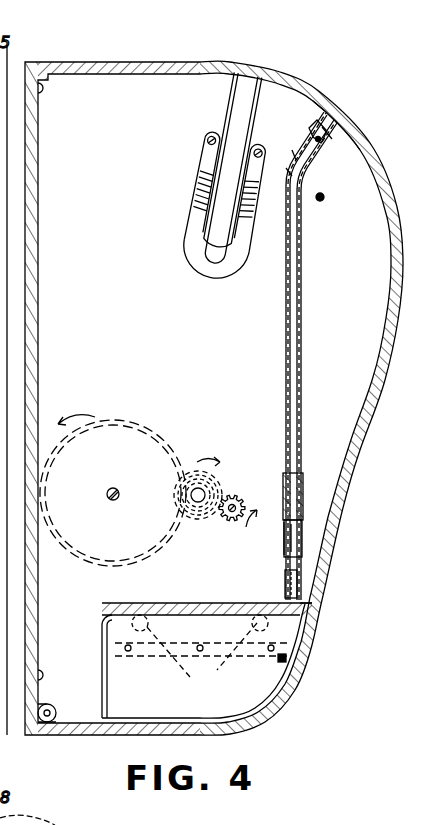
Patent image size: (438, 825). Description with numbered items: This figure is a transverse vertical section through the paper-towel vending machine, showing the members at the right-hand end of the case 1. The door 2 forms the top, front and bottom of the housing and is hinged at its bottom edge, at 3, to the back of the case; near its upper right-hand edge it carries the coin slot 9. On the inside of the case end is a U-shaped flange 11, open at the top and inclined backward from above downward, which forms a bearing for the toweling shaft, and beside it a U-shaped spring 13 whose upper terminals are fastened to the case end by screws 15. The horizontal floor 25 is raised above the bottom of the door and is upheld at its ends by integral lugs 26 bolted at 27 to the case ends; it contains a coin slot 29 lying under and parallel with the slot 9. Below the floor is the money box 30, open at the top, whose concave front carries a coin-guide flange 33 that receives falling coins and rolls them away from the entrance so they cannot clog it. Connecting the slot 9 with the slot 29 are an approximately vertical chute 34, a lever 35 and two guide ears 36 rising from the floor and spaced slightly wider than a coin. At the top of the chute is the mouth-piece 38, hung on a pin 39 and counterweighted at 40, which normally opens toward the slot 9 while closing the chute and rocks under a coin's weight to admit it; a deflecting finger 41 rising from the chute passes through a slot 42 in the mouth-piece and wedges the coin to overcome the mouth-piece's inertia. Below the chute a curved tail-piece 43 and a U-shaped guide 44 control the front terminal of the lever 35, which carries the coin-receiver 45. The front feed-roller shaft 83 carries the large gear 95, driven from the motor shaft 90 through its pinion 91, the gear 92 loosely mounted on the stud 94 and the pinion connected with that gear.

The case 1 is at (112, 398).
The door 2 is at (357, 427).
The hinge 3 is at (50, 722).
The coin slot 9 is at (320, 112).
The U-shaped flange 11 is at (220, 198).
The U-shaped spring 13 is at (209, 284).
The screws 15 is at (225, 171).
The floor 25 is at (198, 603).
The lugs 26 is at (180, 660).
The bolts 27 is at (250, 625).
The coin slot 29 is at (310, 614).
The money box 30 is at (202, 673).
The coin-guide flange 33 is at (277, 661).
The chute 34 is at (301, 351).
The lever 35 is at (284, 526).
The guide ears 36 is at (289, 582).
The mouth-piece 38 is at (312, 125).
The pin 39 is at (320, 142).
The counterweight 40 is at (324, 136).
The deflecting finger 41 is at (291, 168).
The slot 42 is at (287, 172).
The tail-piece 43 is at (300, 548).
The U-shaped guide 44 is at (292, 536).
The coin-receiver 45 is at (300, 503).
The shaft 83 is at (118, 480).
The motor shaft 90 is at (243, 504).
The pinion 91 is at (232, 522).
The gear 92 is at (216, 487).
The stud 94 is at (197, 503).
The large gear 95 is at (126, 432).